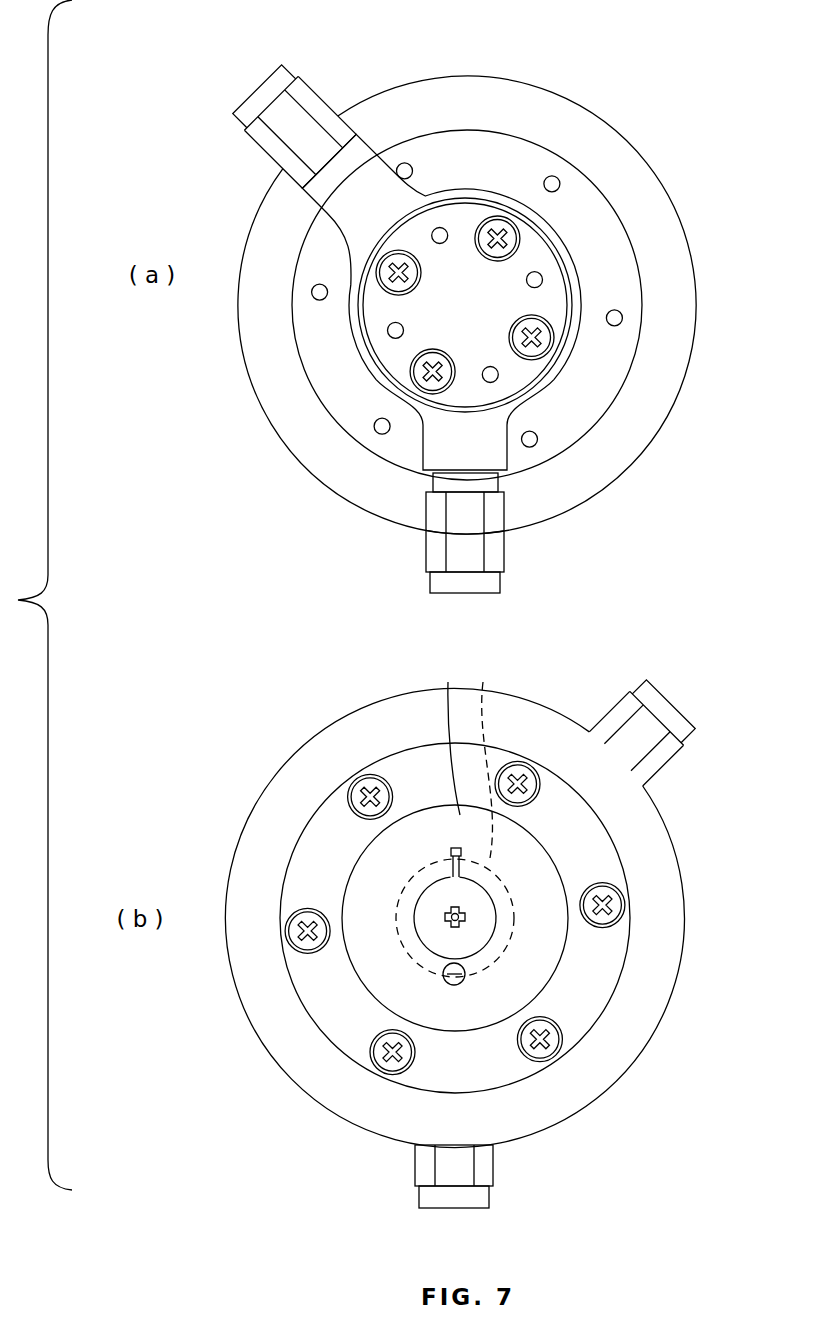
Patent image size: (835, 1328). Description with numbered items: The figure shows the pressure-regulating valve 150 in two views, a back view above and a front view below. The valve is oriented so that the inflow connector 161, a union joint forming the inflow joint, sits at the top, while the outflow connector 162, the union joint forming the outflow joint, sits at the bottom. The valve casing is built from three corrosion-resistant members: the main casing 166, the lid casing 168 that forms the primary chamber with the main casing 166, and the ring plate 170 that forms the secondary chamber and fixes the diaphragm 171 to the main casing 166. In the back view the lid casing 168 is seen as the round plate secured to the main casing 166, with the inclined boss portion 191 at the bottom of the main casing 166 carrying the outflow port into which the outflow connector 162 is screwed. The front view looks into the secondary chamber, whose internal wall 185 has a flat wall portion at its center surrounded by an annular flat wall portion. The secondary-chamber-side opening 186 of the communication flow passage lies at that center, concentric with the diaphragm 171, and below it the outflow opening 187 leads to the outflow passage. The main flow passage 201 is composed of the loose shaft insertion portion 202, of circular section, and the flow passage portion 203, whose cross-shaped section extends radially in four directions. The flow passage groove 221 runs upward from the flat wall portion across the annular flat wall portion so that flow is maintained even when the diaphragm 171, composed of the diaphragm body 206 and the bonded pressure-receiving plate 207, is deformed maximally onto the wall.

The pressure-regulating valve 150 is at (655, 115).
The inflow connector 161 is at (312, 99).
The outflow connector 162 is at (492, 553).
The main casing 166 is at (388, 190).
The lid casing 168 is at (380, 315).
The ring plate 170 is at (603, 853).
The diaphragm 171 is at (455, 790).
The internal wall 185 is at (555, 932).
The secondary-chamber-side opening 186 is at (452, 912).
The outflow opening 187 is at (455, 986).
The inclined boss portion 191 is at (437, 452).
The main flow passage 201 is at (602, 983).
The loose shaft insertion portion 202 is at (461, 917).
The flow passage portion 203 is at (462, 923).
The diaphragm body 206 is at (446, 733).
The pressure-receiving plate 207 is at (427, 654).
The flow passage groove 221 is at (452, 846).